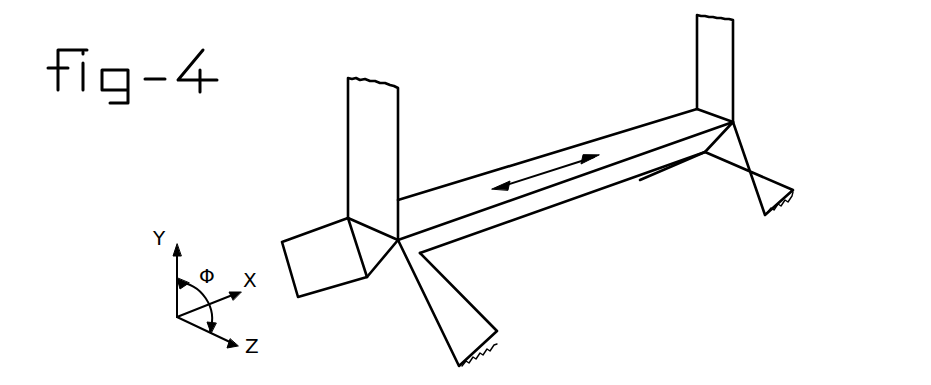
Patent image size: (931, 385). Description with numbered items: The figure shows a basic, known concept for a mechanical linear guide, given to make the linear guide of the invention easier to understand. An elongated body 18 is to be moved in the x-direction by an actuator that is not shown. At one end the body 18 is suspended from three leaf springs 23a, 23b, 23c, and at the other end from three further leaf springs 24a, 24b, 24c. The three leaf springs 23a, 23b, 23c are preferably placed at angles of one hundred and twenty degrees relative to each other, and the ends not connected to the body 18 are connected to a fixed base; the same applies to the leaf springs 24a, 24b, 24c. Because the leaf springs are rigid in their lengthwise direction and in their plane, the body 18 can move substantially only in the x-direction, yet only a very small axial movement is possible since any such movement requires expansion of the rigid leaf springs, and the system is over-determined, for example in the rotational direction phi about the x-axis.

The body 18 is at (549, 198).
The leaf spring 23a is at (387, 134).
The leaf spring 23b is at (479, 337).
The leaf spring 23c is at (306, 287).
The leaf spring 24a is at (722, 62).
The leaf spring 24b is at (763, 175).
The leaf spring 24c is at (653, 176).